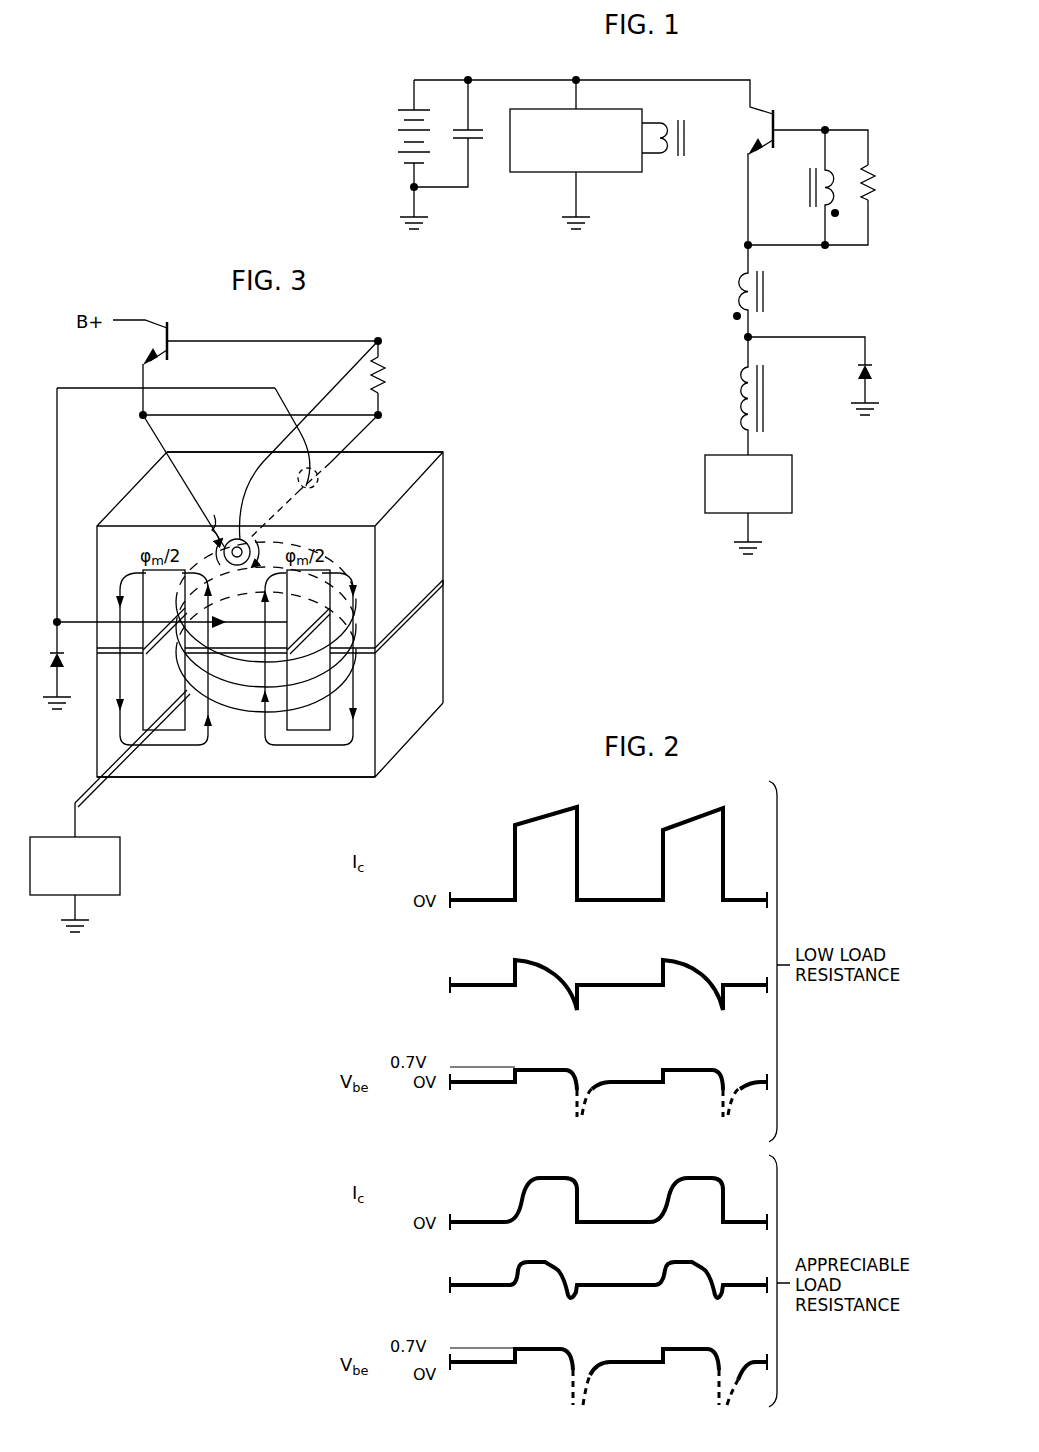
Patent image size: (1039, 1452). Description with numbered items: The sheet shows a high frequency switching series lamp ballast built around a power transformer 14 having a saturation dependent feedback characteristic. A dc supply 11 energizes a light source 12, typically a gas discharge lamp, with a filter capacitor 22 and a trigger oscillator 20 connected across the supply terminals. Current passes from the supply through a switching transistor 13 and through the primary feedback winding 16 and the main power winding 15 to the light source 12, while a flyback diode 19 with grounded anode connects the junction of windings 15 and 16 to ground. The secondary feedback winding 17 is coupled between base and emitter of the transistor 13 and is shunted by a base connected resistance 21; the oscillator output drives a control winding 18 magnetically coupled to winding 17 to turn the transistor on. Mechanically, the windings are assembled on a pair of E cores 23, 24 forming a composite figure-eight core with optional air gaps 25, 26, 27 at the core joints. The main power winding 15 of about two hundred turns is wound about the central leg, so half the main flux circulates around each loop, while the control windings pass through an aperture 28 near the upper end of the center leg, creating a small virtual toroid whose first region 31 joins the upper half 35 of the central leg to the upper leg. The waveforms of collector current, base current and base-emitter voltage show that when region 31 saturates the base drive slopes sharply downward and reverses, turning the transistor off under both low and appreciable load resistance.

In FIG. 1, the dc supply 11 is at (414, 79).
In FIG. 1, the light source 12 is at (795, 486).
In FIG. 3, the light source 12 is at (123, 858).
In FIG. 1, the switching transistor 13 is at (748, 118).
In FIG. 3, the switching transistor 13 is at (163, 322).
In FIG. 3, the power transformer 14 is at (492, 506).
In FIG. 1, the main power winding 15 is at (743, 369).
In FIG. 3, the main power winding 15 is at (246, 692).
In FIG. 1, the primary feedback winding 16 is at (745, 272).
In FIG. 3, the primary feedback winding 16 is at (188, 512).
In FIG. 1, the secondary feedback winding 17 is at (814, 173).
In FIG. 3, the secondary feedback winding 17 is at (244, 496).
In FIG. 1, the control winding 18 is at (675, 160).
In FIG. 1, the flyback diode 19 is at (869, 366).
In FIG. 3, the flyback diode 19 is at (157, 548).
In FIG. 1, the trigger oscillator 20 is at (552, 172).
In FIG. 1, the base connected resistance 21 is at (869, 170).
In FIG. 3, the base connected resistance 21 is at (392, 374).
In FIG. 1, the filter capacitor 22 is at (472, 125).
In FIG. 3, the E core 23 is at (426, 538).
In FIG. 3, the E core 24 is at (430, 638).
In FIG. 3, the air gap 25 is at (443, 590).
In FIG. 3, the air gap 26 is at (330, 654).
In FIG. 3, the air gap 27 is at (107, 653).
In FIG. 3, the aperture 28 is at (221, 551).
In FIG. 2, the first region 31 is at (709, 972).
In FIG. 3, the upper half of the central leg 35 is at (188, 578).